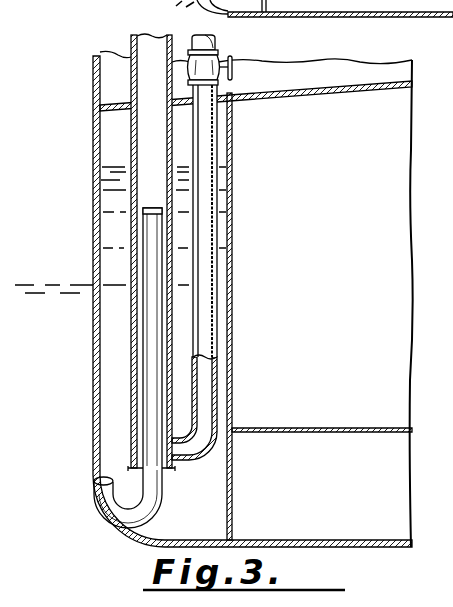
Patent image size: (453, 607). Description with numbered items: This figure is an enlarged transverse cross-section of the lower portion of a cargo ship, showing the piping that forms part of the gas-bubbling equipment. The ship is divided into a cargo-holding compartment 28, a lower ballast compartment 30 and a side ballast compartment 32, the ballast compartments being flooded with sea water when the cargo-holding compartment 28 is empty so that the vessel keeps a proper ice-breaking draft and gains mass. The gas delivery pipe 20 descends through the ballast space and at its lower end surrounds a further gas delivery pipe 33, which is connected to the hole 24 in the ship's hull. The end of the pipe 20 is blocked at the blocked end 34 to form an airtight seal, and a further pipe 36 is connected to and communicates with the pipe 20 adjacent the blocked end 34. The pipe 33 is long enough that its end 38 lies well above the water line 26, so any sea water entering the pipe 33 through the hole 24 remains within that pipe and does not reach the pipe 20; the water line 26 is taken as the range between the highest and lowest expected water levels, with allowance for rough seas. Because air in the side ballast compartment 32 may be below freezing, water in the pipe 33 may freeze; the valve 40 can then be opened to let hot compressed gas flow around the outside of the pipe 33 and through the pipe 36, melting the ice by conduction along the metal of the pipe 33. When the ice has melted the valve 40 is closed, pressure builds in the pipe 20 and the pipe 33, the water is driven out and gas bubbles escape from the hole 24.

The gas delivery pipe 20 is at (146, 34).
The hole 24 is at (124, 532).
The water line 26 is at (69, 283).
The cargo-holding compartment 28 is at (383, 136).
The lower ballast compartment 30 is at (375, 465).
The side ballast compartment 32 is at (183, 277).
The further gas delivery pipe 33 is at (153, 355).
The blocked end 34 is at (102, 488).
The further pipe 36 is at (216, 392).
The end of pipe 33 38 is at (153, 207).
The valve 40 is at (212, 63).